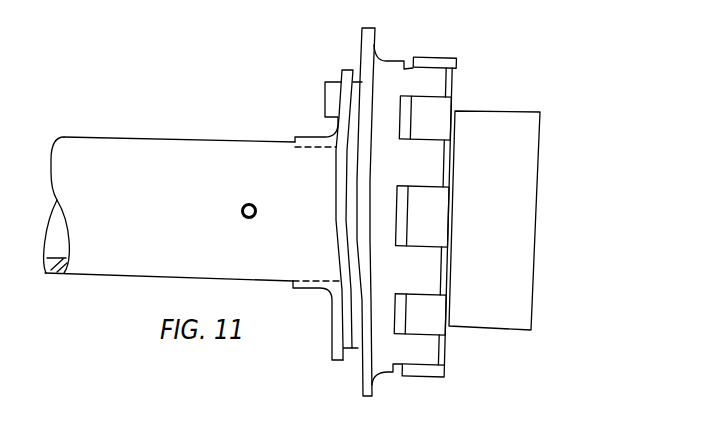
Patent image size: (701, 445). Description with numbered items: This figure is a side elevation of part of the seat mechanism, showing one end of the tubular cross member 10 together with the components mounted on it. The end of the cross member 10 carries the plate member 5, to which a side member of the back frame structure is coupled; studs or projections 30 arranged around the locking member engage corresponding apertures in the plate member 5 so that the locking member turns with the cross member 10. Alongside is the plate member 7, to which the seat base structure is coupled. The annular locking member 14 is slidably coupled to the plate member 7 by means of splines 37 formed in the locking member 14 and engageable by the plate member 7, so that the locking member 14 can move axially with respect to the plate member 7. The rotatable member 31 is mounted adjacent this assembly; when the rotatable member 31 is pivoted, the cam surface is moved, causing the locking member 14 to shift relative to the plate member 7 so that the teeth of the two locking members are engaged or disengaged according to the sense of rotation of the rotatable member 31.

The cross member 10 is at (188, 160).
The studs or projections 30 is at (326, 99).
The plate member 5 is at (347, 80).
The plate member 7 is at (383, 76).
The locking member 14 is at (427, 113).
The splines 37 is at (428, 220).
The rotatable member 31 is at (601, 154).